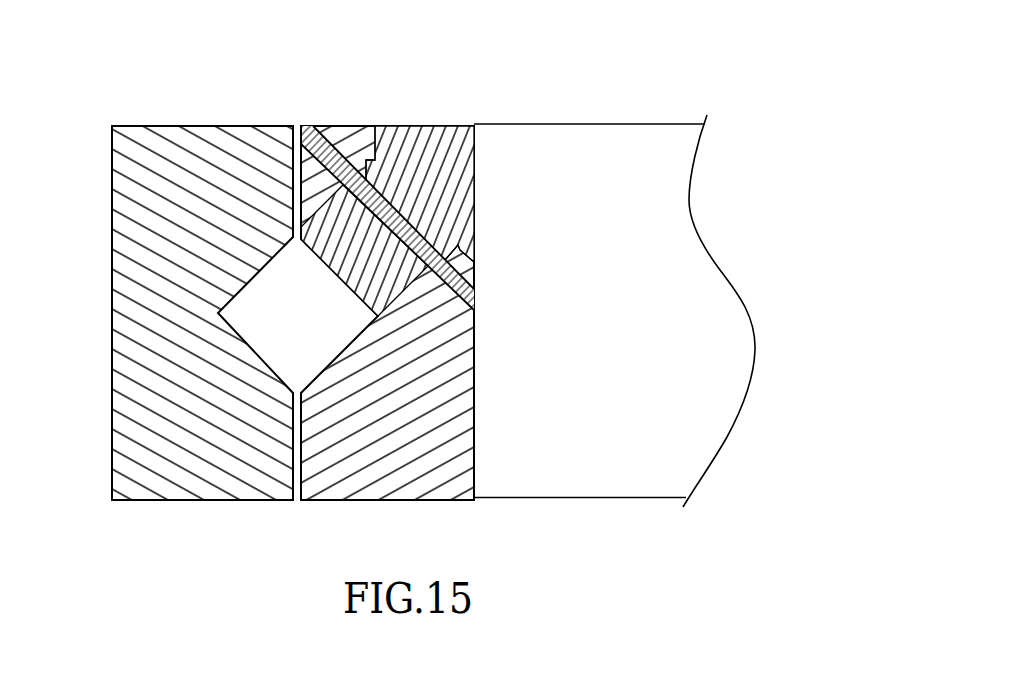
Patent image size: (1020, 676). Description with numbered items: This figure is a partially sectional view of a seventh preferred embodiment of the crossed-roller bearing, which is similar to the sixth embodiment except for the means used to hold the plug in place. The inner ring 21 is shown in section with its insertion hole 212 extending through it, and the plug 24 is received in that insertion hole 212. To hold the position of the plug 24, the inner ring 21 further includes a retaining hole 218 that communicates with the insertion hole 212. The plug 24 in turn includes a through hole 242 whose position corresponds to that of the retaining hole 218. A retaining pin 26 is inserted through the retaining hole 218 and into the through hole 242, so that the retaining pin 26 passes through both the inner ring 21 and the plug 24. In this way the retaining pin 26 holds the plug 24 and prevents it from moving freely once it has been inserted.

The inner ring 21 is at (353, 126).
The insertion hole 212 is at (303, 202).
The retaining hole 218 is at (313, 128).
The plug 24 is at (388, 132).
The through hole 242 is at (409, 222).
The retaining pin 26 is at (474, 152).